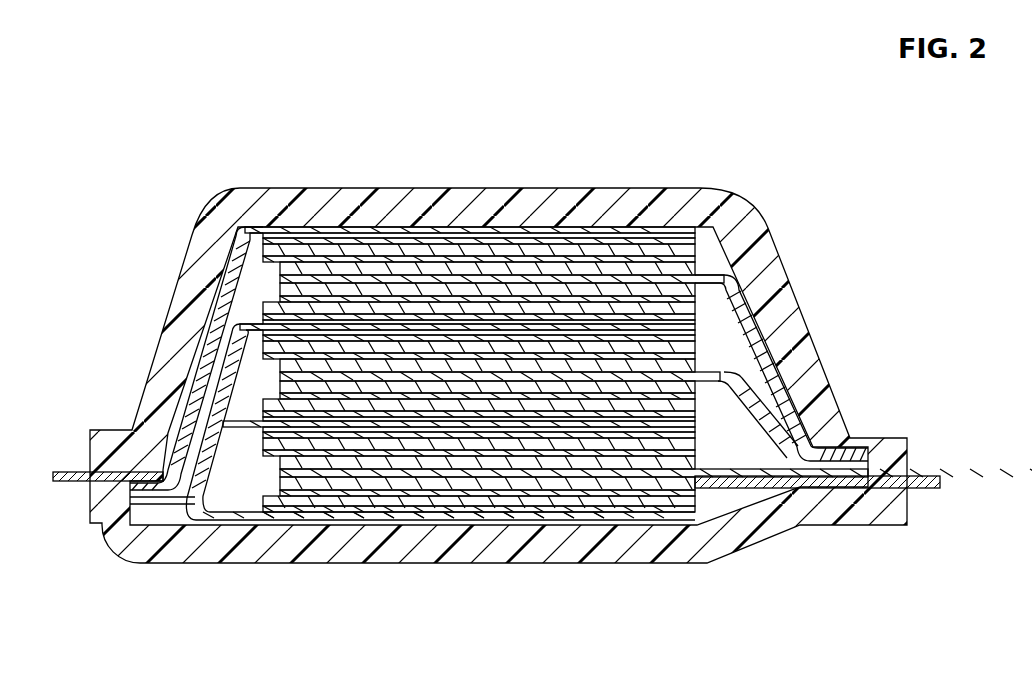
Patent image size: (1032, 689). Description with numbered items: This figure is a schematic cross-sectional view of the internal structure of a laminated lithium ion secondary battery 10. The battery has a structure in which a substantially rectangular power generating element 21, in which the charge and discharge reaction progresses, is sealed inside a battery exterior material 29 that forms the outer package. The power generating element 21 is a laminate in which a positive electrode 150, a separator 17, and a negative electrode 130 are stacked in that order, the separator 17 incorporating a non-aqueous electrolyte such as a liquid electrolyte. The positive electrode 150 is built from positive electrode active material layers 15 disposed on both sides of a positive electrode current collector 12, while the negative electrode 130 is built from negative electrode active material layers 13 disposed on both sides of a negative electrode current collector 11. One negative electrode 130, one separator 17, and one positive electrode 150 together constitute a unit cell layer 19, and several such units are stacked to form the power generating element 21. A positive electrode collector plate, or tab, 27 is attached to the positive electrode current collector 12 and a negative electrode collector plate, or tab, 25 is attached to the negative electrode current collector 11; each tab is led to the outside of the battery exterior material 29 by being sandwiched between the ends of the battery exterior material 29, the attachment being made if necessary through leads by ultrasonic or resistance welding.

The laminated lithium ion secondary battery 10 is at (84, 93).
The negative electrode current collector 11 is at (205, 303).
The positive electrode current collector 12 is at (358, 255).
The negative electrode active material layer 13 is at (480, 258).
The positive electrode active material layer 15 is at (403, 258).
The separator 17 is at (440, 262).
The unit cell layer 19 is at (540, 131).
The power generating element 21 is at (738, 328).
The negative electrode collector plate (tab) 25 is at (78, 470).
The positive electrode collector plate (tab) 27 is at (925, 474).
The battery exterior material 29 is at (887, 436).
The negative electrode 130 is at (650, 618).
The positive electrode 150 is at (360, 618).